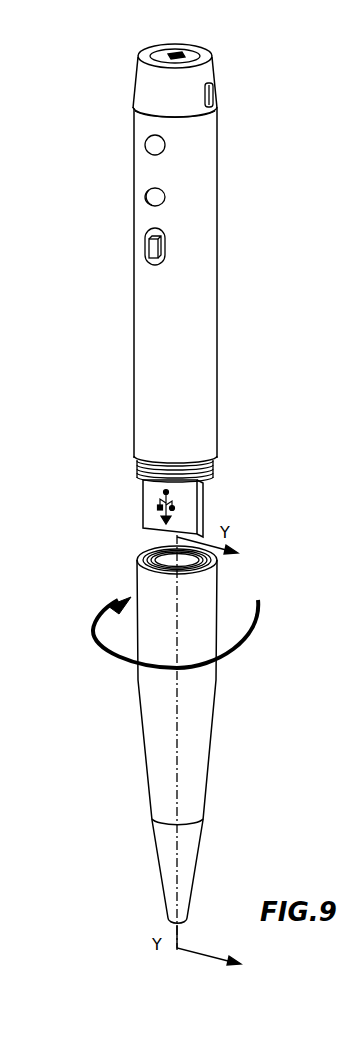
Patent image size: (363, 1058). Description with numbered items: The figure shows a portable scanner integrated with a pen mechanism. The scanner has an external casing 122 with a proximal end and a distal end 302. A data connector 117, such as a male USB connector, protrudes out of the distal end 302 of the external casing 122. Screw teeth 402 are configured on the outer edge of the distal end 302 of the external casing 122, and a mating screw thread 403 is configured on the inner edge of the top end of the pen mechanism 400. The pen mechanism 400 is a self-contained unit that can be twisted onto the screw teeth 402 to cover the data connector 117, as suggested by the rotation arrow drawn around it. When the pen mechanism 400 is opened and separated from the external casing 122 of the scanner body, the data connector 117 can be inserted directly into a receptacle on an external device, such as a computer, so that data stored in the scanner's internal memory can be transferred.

The external casing 122 is at (183, 255).
The distal end 302 is at (207, 447).
The screw teeth 402 is at (138, 472).
The data connector 117 is at (204, 510).
The screw thread 403 is at (150, 555).
The pen mechanism 400 is at (143, 696).